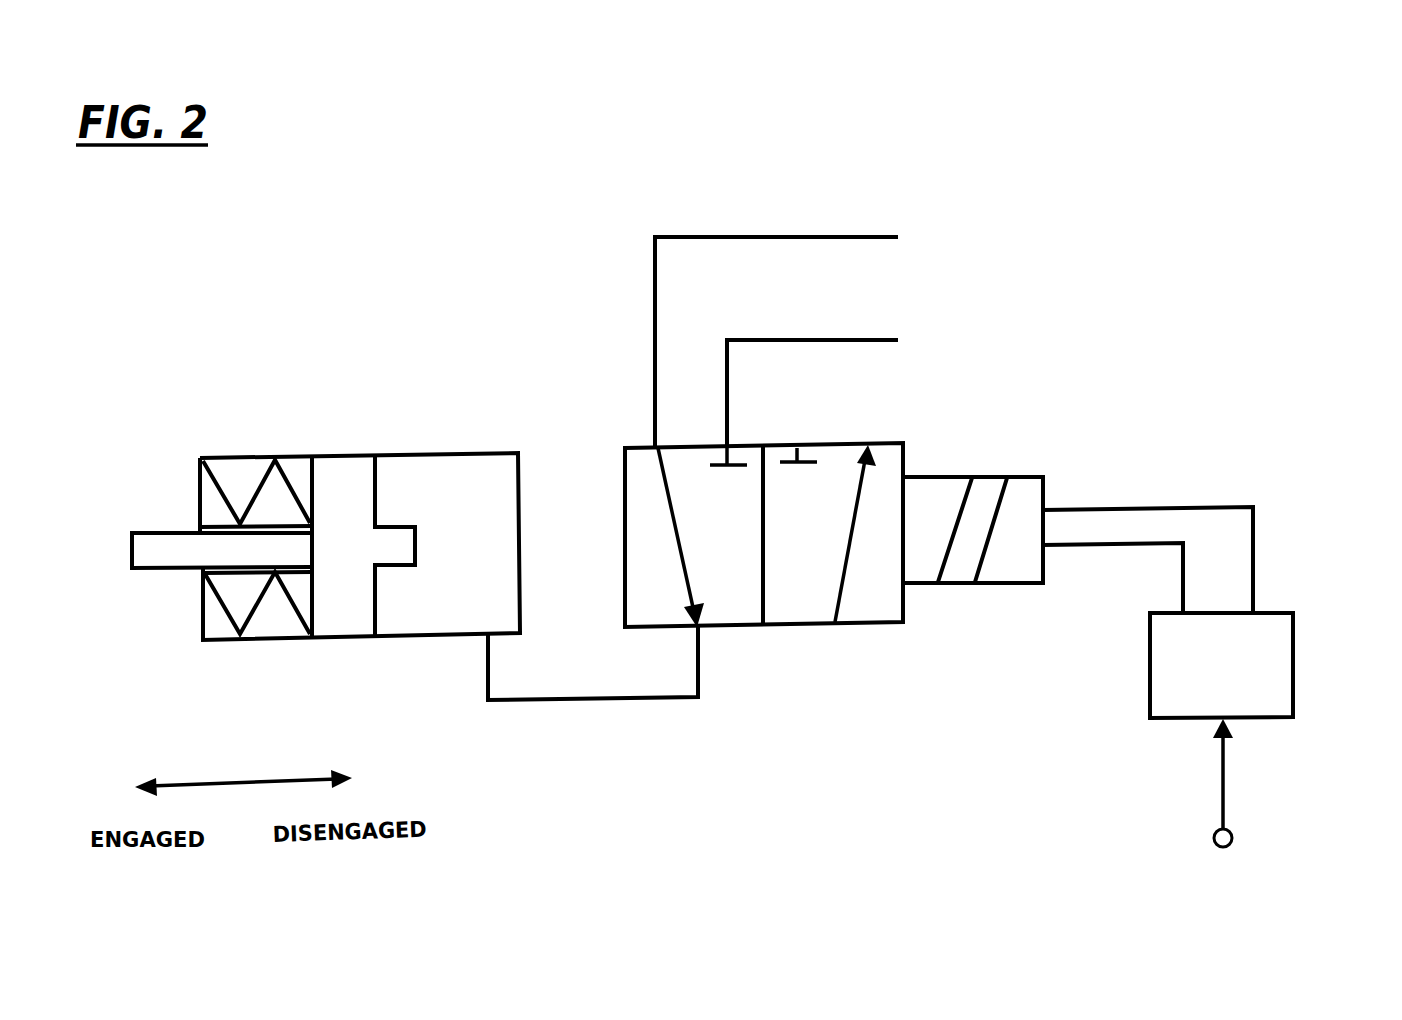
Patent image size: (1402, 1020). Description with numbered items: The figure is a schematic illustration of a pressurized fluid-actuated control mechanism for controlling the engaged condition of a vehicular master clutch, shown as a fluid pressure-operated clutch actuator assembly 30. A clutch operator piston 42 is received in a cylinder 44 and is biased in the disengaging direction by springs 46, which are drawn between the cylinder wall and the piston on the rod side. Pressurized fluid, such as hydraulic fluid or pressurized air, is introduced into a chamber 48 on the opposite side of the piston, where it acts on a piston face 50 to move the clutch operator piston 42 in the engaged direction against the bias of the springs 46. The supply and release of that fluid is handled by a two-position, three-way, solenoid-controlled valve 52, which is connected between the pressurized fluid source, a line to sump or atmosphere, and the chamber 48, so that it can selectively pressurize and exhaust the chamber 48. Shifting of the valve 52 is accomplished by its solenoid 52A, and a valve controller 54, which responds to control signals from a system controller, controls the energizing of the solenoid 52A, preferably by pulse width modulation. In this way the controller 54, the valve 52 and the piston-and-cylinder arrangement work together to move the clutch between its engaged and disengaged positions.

The clutch actuator assembly 30 is at (1244, 216).
The clutch operator piston 42 is at (347, 528).
The cylinder 44 is at (447, 453).
The springs 46 is at (237, 493).
The chamber 48 is at (483, 525).
The piston face 50 is at (383, 598).
The solenoid-controlled valve 52 is at (767, 658).
The solenoid 52A is at (937, 510).
The valve controller 54 is at (1257, 683).